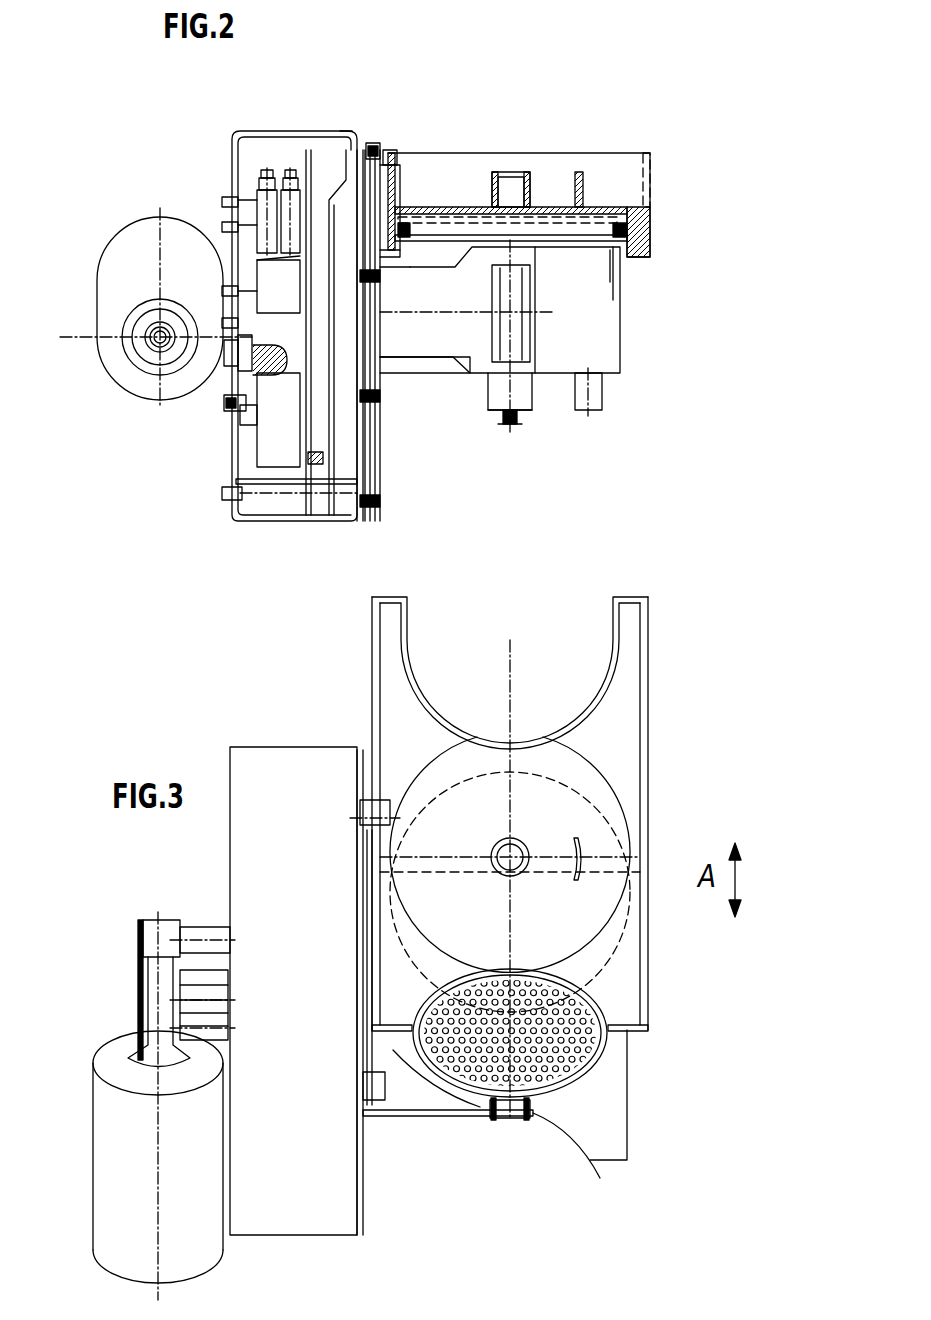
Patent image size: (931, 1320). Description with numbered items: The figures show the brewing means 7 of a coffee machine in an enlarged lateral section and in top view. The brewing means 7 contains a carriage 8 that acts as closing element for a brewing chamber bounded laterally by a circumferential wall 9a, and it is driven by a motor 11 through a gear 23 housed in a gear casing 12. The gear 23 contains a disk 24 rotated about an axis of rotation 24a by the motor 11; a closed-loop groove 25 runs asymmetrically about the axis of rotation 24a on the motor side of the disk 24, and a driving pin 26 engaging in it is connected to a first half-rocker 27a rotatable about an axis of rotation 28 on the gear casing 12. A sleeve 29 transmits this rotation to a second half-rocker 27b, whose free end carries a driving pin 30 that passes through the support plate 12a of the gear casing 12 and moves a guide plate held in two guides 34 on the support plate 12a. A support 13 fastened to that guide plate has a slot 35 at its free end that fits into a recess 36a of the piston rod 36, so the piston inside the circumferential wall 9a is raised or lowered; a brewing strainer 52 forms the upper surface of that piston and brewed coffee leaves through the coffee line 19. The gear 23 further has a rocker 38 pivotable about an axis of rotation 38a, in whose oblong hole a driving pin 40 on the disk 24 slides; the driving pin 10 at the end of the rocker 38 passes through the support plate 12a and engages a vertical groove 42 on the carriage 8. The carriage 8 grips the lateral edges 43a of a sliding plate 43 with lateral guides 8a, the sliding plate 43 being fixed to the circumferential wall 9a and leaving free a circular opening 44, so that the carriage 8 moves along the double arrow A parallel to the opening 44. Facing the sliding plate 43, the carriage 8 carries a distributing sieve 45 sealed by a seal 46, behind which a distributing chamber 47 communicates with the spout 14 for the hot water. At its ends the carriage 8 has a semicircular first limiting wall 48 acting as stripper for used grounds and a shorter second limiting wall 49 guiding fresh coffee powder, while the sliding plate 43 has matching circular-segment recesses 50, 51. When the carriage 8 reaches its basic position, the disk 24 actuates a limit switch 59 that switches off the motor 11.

In FIG. 2, the brewing means 7 is at (678, 310).
In FIG. 2, the carriage 8 is at (648, 236).
In FIG. 3, the carriage 8 is at (607, 740).
In FIG. 2, the lateral guides 8a is at (618, 240).
In FIG. 2, the circumferential wall 9a is at (604, 350).
In FIG. 3, the circumferential wall 9a is at (583, 1053).
In FIG. 2, the driving pin 10 is at (373, 153).
In FIG. 2, the motor 11 is at (148, 381).
In FIG. 3, the motor 11 is at (164, 1106).
In FIG. 2, the gear casing 12 is at (232, 133).
In FIG. 3, the gear casing 12 is at (312, 1010).
In FIG. 2, the support plate 12a is at (352, 131).
In FIG. 2, the support 13 is at (463, 408).
In FIG. 2, the spout 14 is at (530, 177).
In FIG. 2, the coffee line 19 is at (598, 397).
In FIG. 2, the gear 23 is at (252, 446).
In FIG. 2, the disk 24 is at (275, 452).
In FIG. 2, the axis of rotation 24a is at (222, 291).
In FIG. 2, the groove 25 is at (222, 323).
In FIG. 2, the driving pin 26 is at (238, 343).
In FIG. 2, the first half-rocker 27a is at (240, 418).
In FIG. 2, the second half-rocker 27b is at (352, 400).
In FIG. 2, the axis of rotation 28 is at (230, 398).
In FIG. 2, the sleeve 29 is at (327, 430).
In FIG. 2, the driving pin 30 is at (385, 300).
In FIG. 2, the guides 34 is at (367, 477).
In FIG. 2, the slot 35 is at (512, 428).
In FIG. 2, the piston rod 36 is at (510, 432).
In FIG. 2, the recess 36a is at (513, 428).
In FIG. 2, the rocker 38 is at (306, 153).
In FIG. 2, the axis of rotation 38a is at (272, 498).
In FIG. 2, the driving pin 40 is at (312, 460).
In FIG. 2, the vertical groove 42 is at (395, 152).
In FIG. 2, the sliding plate 43 is at (577, 242).
In FIG. 2, the lateral edges 43a is at (650, 255).
In FIG. 3, the lateral edges 43a is at (628, 1132).
In FIG. 3, the opening 44 is at (594, 1079).
In FIG. 2, the distributing sieve 45 is at (612, 236).
In FIG. 2, the seal 46 is at (645, 212).
In FIG. 2, the distributing chamber 47 is at (585, 226).
In FIG. 3, the first limiting wall 48 is at (418, 672).
In FIG. 3, the second limiting wall 49 is at (395, 1000).
In FIG. 3, the recess 50 is at (615, 780).
In FIG. 3, the recess 51 is at (598, 1135).
In FIG. 3, the brewing strainer 52 is at (485, 1100).
In FIG. 2, the limit switch 59 is at (268, 200).